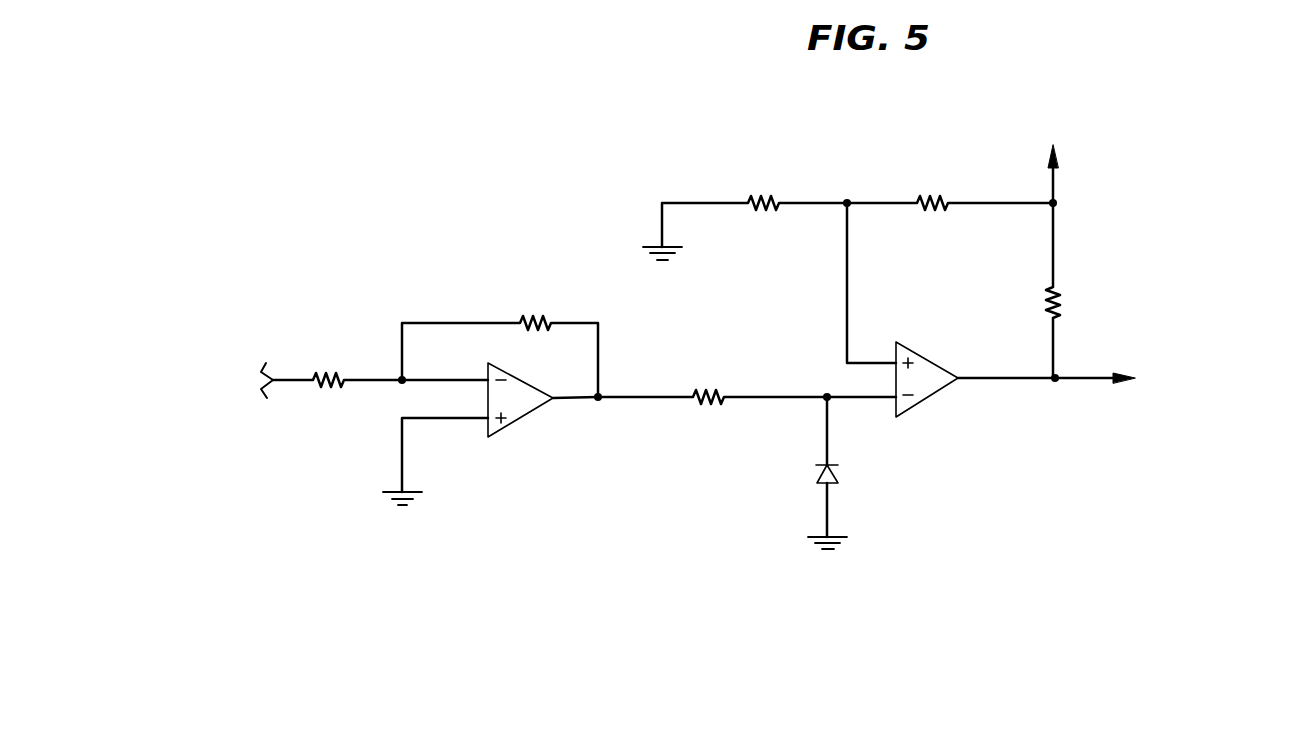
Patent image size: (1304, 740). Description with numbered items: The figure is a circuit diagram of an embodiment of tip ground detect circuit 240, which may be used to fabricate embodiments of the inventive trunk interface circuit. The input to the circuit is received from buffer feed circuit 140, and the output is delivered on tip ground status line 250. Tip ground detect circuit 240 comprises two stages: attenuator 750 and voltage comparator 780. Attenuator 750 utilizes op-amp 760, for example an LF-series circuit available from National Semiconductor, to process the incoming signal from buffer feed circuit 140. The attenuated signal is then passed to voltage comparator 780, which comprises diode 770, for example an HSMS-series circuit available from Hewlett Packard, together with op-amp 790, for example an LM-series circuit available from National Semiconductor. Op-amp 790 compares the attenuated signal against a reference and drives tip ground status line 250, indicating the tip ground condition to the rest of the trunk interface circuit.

The buffer feed circuit 140 is at (188, 398).
The tip ground detect circuit 240 is at (567, 147).
The tip ground status line 250 is at (1115, 392).
The attenuator 750 is at (635, 298).
The op-amp 760 is at (525, 413).
The diode 770 is at (817, 470).
The voltage comparator 780 is at (1045, 128).
The op-amp 790 is at (935, 394).